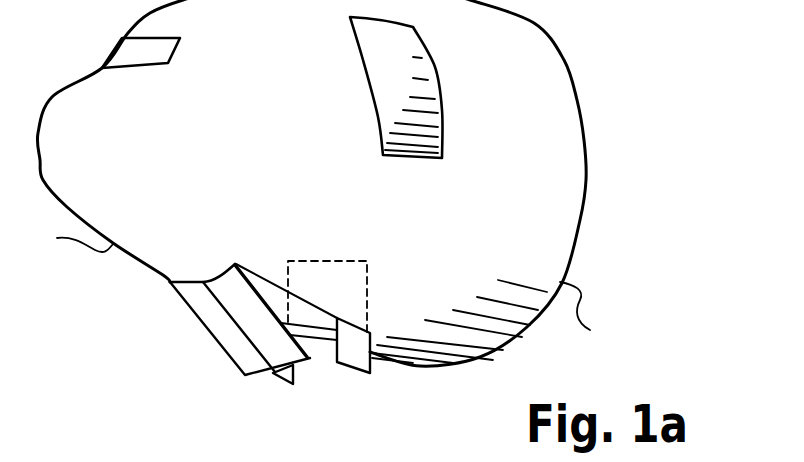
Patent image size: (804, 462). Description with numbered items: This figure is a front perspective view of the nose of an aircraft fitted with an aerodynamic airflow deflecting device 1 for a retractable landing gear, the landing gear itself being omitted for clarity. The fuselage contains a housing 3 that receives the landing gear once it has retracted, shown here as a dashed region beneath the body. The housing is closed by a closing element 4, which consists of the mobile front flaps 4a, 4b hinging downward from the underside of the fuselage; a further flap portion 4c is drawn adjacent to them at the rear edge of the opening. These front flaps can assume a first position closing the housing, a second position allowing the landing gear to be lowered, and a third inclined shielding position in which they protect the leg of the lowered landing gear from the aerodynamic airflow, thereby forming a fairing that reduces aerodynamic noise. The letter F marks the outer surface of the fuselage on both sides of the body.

The aerodynamic airflow deflecting device 1 is at (154, 313).
The housing 3 is at (330, 288).
The closing element 4 is at (200, 350).
The front flap 4a is at (240, 352).
The front flap 4b is at (292, 357).
The flap portion 4c is at (368, 367).
The surface F is at (322, 289).